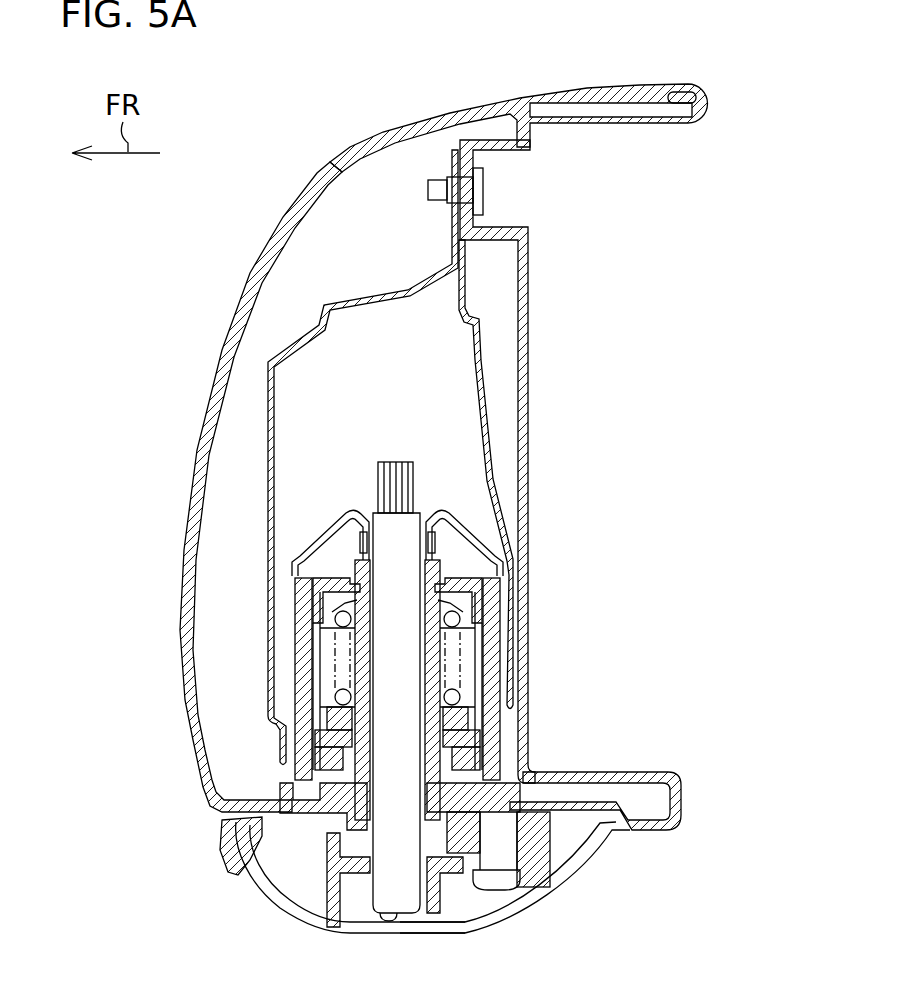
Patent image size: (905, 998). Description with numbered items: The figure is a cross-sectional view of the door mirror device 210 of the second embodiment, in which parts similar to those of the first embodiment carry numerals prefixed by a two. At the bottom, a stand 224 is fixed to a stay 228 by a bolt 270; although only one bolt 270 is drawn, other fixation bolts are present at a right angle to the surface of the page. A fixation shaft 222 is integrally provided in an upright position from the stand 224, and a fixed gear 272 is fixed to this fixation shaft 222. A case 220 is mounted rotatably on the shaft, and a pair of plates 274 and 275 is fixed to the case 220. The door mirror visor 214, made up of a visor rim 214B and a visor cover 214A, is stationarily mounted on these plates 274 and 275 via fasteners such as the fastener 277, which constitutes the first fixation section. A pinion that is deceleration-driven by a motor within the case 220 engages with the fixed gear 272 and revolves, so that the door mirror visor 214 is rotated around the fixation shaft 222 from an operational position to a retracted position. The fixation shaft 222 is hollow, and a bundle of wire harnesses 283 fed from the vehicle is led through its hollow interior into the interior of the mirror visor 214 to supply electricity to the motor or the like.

The door mirror device 210 is at (146, 270).
The door mirror visor 214 is at (594, 74).
The visor cover 214A is at (190, 497).
The visor rim 214B is at (684, 797).
The case 220 is at (505, 730).
The fixation shaft 222 is at (433, 672).
The stand 224 is at (265, 838).
The stay 228 is at (230, 853).
The bolt 270 is at (510, 893).
The fixed gear 272 is at (475, 757).
The plate 274 is at (527, 357).
The plate 275 is at (372, 305).
The fastener 277 is at (483, 212).
The wire harnesses 283 is at (427, 912).